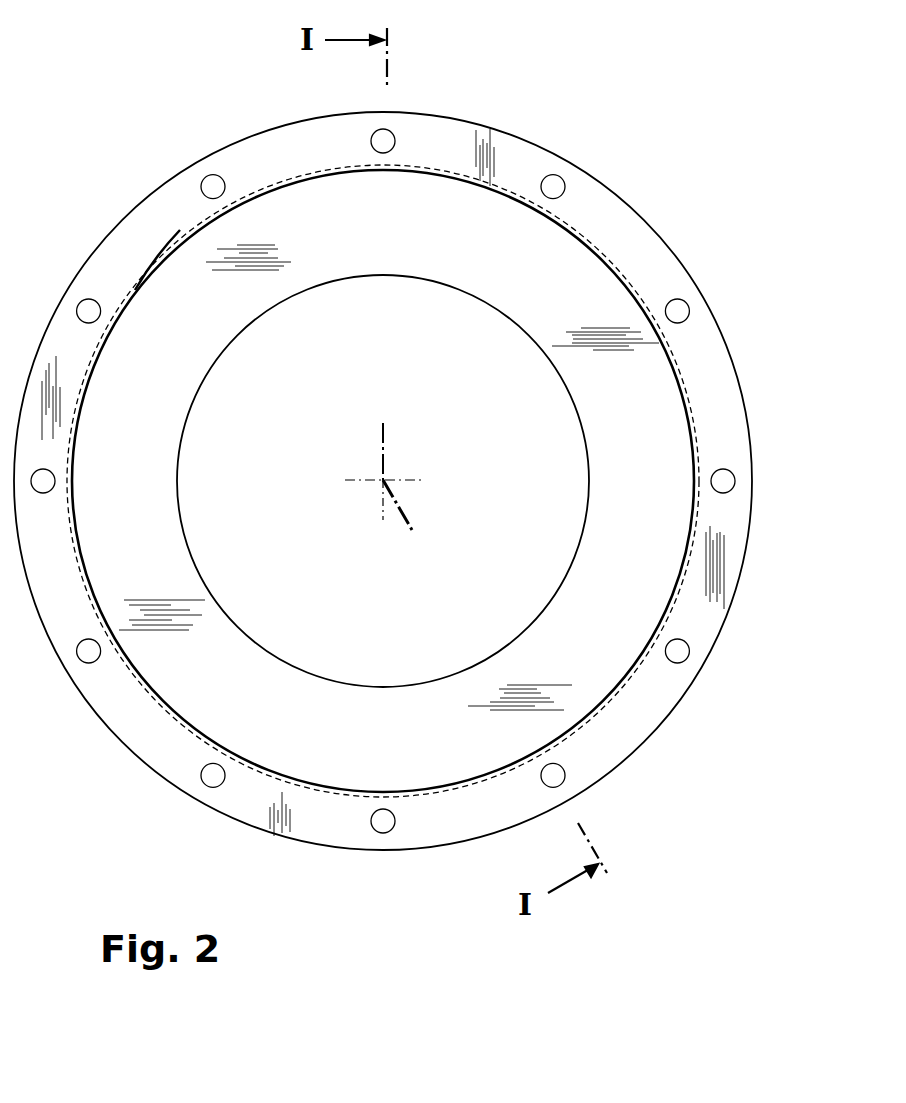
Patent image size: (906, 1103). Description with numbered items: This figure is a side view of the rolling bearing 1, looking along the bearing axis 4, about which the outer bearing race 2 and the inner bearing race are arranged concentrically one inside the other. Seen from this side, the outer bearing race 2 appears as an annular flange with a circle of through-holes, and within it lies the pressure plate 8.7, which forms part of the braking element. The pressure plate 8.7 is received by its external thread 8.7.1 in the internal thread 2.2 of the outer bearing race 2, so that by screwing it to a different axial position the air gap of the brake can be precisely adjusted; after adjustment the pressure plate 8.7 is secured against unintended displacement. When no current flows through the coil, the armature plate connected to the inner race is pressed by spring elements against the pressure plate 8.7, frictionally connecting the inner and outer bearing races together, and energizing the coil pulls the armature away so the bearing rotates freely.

The rolling bearing 1 is at (667, 193).
The outer bearing race 2 is at (520, 153).
The internal thread 2.2 is at (160, 262).
The bearing axis 4 is at (390, 476).
The pressure plate 8.7 is at (573, 677).
The external thread 8.7.1 is at (197, 740).